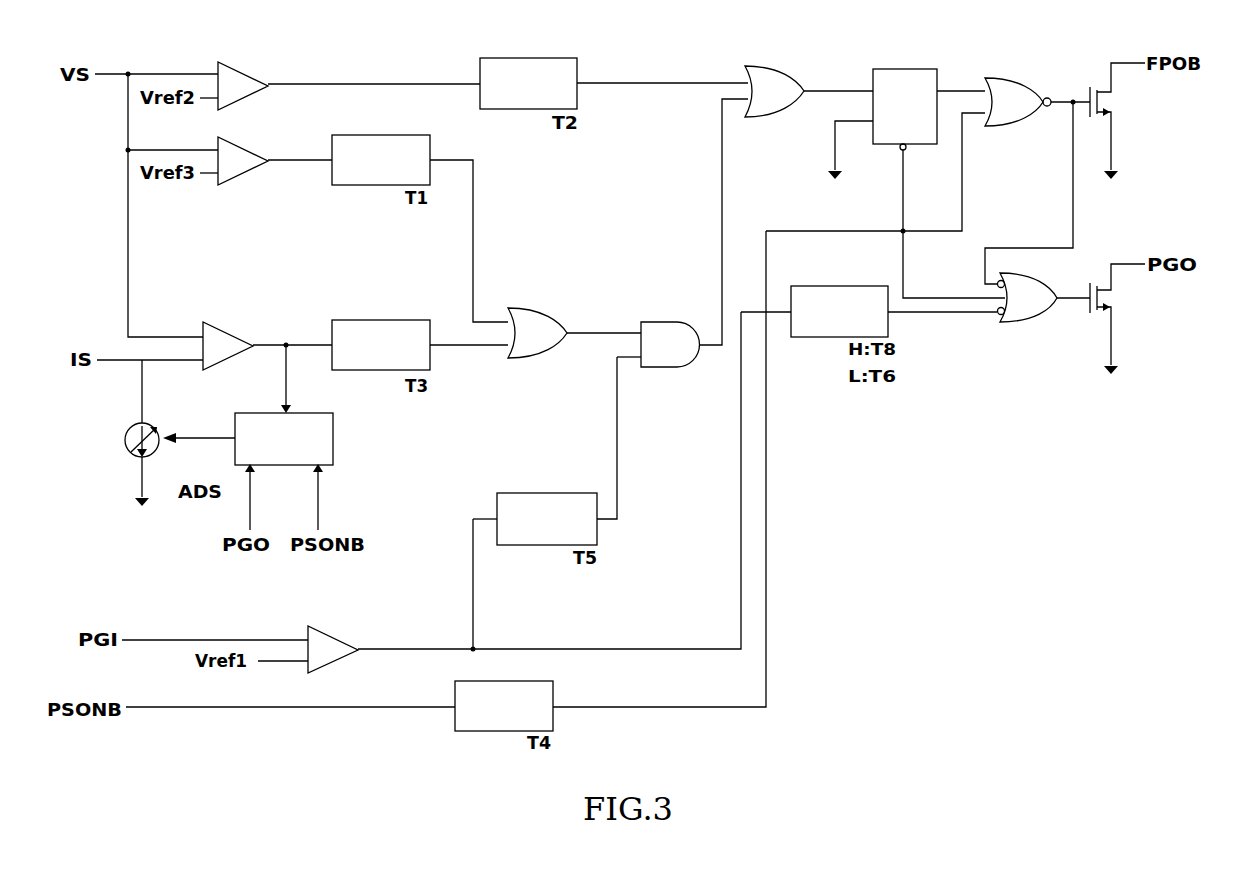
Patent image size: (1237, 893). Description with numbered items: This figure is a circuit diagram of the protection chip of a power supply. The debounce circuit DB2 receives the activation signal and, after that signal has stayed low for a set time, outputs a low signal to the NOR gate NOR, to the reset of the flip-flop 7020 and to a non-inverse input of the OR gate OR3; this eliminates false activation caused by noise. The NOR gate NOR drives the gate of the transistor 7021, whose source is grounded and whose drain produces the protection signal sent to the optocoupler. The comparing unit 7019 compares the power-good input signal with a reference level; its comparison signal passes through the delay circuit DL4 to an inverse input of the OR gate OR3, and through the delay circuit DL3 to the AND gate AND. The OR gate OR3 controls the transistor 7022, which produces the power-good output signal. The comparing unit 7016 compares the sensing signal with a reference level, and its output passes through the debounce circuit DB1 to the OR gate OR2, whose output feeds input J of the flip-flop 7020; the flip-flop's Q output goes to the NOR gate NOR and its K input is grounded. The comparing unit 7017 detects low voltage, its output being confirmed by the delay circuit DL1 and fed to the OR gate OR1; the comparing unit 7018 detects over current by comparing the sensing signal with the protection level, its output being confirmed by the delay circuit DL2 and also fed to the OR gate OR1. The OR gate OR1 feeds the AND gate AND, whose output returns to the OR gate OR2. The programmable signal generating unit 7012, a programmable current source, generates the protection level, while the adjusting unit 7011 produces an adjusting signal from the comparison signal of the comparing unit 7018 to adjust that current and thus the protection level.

The adjusting unit 7011 is at (325, 439).
The programmable signal generating unit 7012 is at (125, 442).
The comparing unit 7016 is at (250, 74).
The comparing unit 7017 is at (250, 150).
The comparing unit 7018 is at (236, 333).
The comparing unit 7019 is at (340, 638).
The flip-flop 7020 is at (905, 69).
The transistor 7021 is at (1088, 88).
The transistor 7022 is at (1088, 312).
The debounce circuit DB1 is at (527, 58).
The debounce circuit DB2 is at (455, 718).
The delay circuit DL1 is at (383, 135).
The delay circuit DL2 is at (372, 320).
The delay circuit DL3 is at (568, 480).
The delay circuit DL4 is at (800, 337).
The OR gate OR1 is at (528, 308).
The OR gate OR2 is at (768, 66).
The OR gate OR3 is at (1037, 320).
The AND gate AND is at (651, 322).
The NOR gate NOR is at (995, 78).